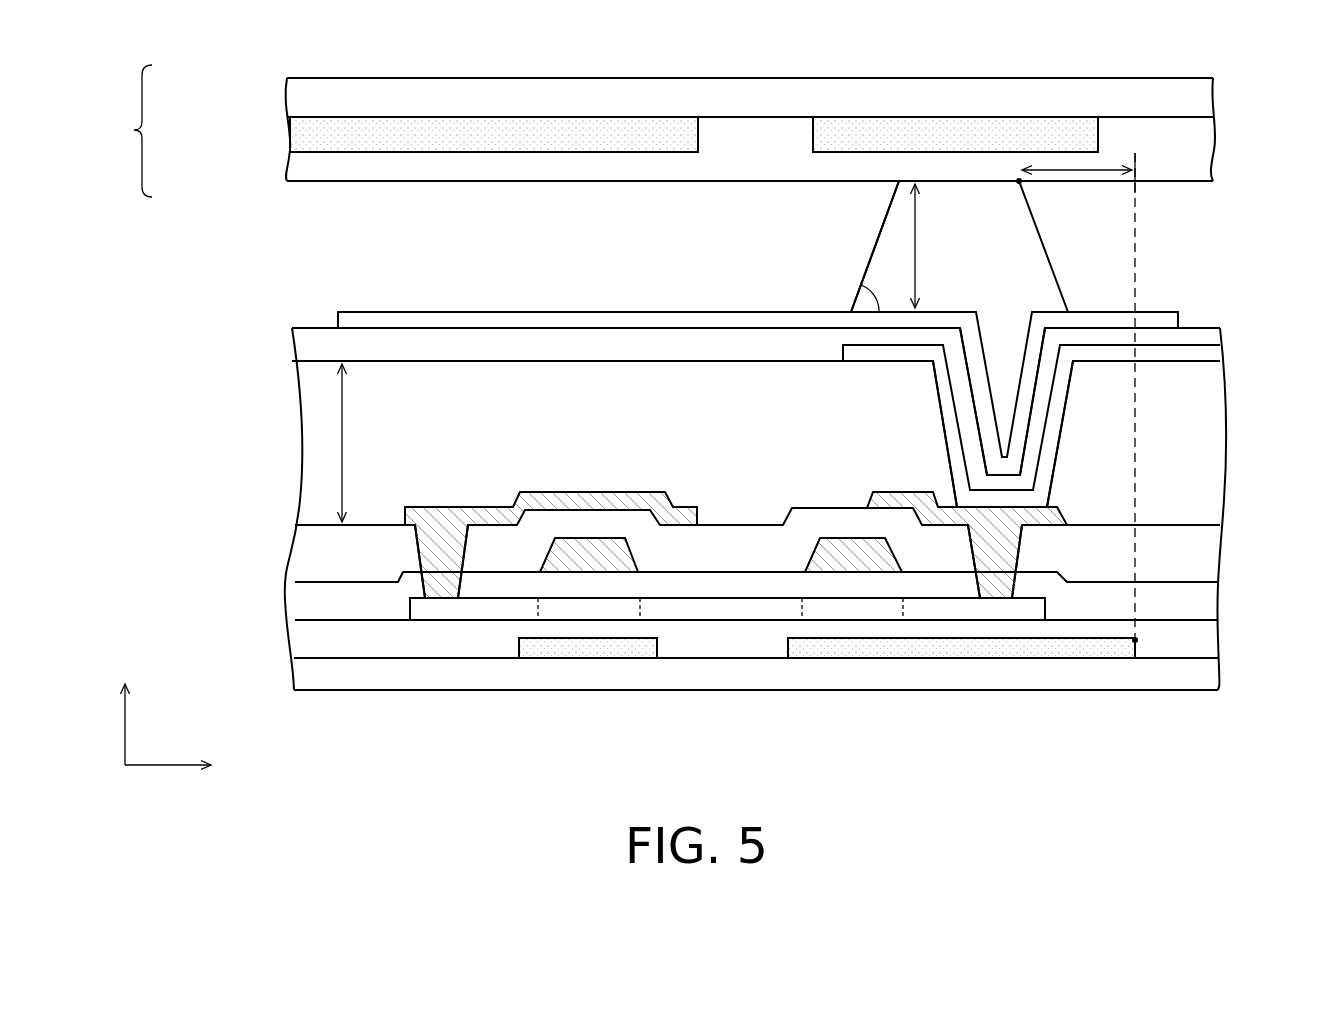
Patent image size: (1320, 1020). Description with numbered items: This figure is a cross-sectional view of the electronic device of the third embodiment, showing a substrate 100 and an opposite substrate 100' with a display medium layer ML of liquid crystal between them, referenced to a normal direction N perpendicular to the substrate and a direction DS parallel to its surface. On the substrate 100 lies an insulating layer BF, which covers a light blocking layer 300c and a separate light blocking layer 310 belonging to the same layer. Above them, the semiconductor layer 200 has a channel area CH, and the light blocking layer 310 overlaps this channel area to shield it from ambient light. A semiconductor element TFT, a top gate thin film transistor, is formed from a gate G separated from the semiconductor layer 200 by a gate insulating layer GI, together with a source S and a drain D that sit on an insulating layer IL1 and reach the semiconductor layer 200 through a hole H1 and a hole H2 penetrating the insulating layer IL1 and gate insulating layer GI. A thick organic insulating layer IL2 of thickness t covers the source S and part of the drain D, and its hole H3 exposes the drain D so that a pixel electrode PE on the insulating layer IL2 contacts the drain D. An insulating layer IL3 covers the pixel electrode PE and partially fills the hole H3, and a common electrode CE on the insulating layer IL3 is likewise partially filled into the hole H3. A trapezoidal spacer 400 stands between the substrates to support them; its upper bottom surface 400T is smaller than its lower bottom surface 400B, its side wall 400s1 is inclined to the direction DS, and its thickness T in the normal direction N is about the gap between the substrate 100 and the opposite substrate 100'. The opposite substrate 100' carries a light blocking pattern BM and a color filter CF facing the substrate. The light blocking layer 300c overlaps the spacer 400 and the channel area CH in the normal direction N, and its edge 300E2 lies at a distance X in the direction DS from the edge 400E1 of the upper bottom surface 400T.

The opposite substrate 100' is at (794, 129).
The color filter CF is at (1203, 158).
The light blocking pattern BM is at (1050, 135).
The spacer 400 is at (1042, 243).
The upper bottom surface 400T is at (899, 181).
The side wall 400s1 is at (877, 240).
The lower bottom surface 400B is at (886, 313).
The edge 400E1 is at (1019, 181).
The distance X is at (1078, 387).
The thickness T is at (927, 246).
The display medium layer ML is at (718, 223).
The common electrode CE is at (1145, 315).
The insulating layer IL3 is at (1207, 332).
The pixel electrode PE is at (1212, 352).
The insulating layer IL2 is at (1212, 437).
The hole H3 is at (943, 417).
The thickness t is at (352, 443).
The insulating layer IL1 is at (1195, 552).
The source S is at (551, 545).
The hole H1 is at (419, 543).
The drain D is at (967, 545).
The hole H2 is at (977, 543).
The gate insulating layer GI is at (1183, 600).
The gate G is at (562, 556).
The light blocking layer 310 is at (632, 650).
The channel area CH is at (593, 608).
The insulating layer BF is at (1195, 635).
The semiconductor layer 200 is at (1027, 610).
The light blocking layer 300c is at (852, 653).
The edge 300E2 is at (1135, 641).
The substrate 100 is at (802, 677).
The semiconductor element TFT is at (142, 132).
The normal direction N is at (123, 703).
The direction DS is at (197, 766).